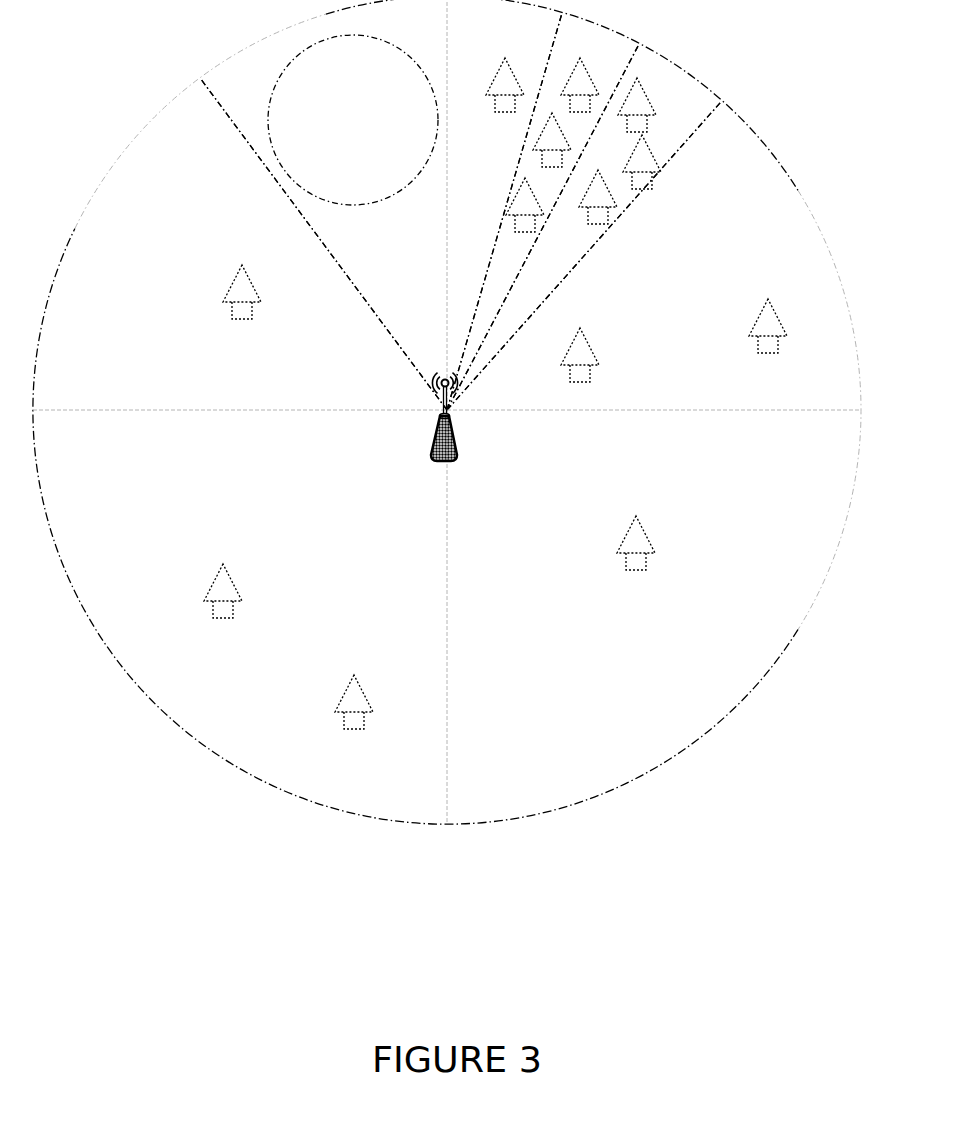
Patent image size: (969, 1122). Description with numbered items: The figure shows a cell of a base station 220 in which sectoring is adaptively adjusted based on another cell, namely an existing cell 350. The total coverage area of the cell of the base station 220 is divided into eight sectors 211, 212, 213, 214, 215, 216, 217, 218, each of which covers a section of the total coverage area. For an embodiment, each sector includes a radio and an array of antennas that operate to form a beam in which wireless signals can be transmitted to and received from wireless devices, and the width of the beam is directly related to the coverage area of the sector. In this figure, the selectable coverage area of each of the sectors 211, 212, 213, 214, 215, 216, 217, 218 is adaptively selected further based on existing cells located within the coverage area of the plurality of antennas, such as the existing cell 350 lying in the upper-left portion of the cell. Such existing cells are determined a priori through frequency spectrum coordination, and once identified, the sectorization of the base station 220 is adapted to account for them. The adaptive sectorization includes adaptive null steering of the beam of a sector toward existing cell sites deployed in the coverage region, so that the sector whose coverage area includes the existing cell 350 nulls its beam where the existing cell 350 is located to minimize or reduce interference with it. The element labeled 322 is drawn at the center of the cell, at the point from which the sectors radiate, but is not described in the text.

The sector 211 is at (517, 30).
The sector 212 is at (600, 50).
The sector 213 is at (698, 120).
The sector 214 is at (760, 238).
The sector 215 is at (750, 534).
The sector 216 is at (306, 498).
The sector 217 is at (307, 350).
The sector 218 is at (413, 270).
The base station 220 is at (129, 149).
The base station tower 322 is at (433, 426).
The existing cell 350 is at (392, 107).